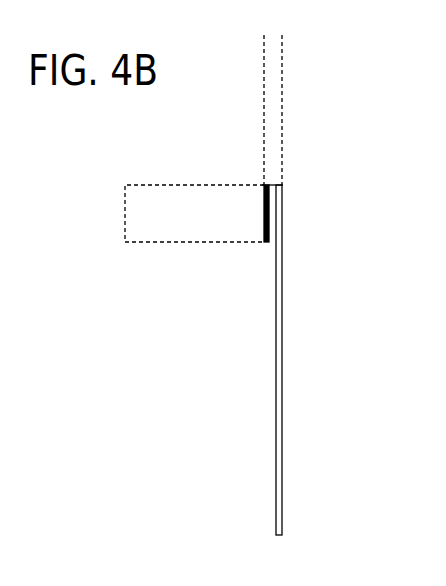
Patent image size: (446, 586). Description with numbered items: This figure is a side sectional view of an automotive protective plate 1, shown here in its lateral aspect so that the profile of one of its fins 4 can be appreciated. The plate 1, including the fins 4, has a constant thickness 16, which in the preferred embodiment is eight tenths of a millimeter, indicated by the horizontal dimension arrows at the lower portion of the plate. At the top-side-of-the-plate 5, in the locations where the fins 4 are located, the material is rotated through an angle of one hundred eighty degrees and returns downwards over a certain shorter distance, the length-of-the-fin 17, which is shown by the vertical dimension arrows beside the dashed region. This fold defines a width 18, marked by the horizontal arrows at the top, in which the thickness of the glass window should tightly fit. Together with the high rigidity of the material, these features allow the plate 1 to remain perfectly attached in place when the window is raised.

The plate 1 is at (283, 276).
The fin 4 is at (264, 188).
The top-side-of-the-plate 5 is at (283, 186).
The thickness 16 is at (222, 441).
The length-of-the-fin 17 is at (127, 186).
The width 18 is at (208, 90).